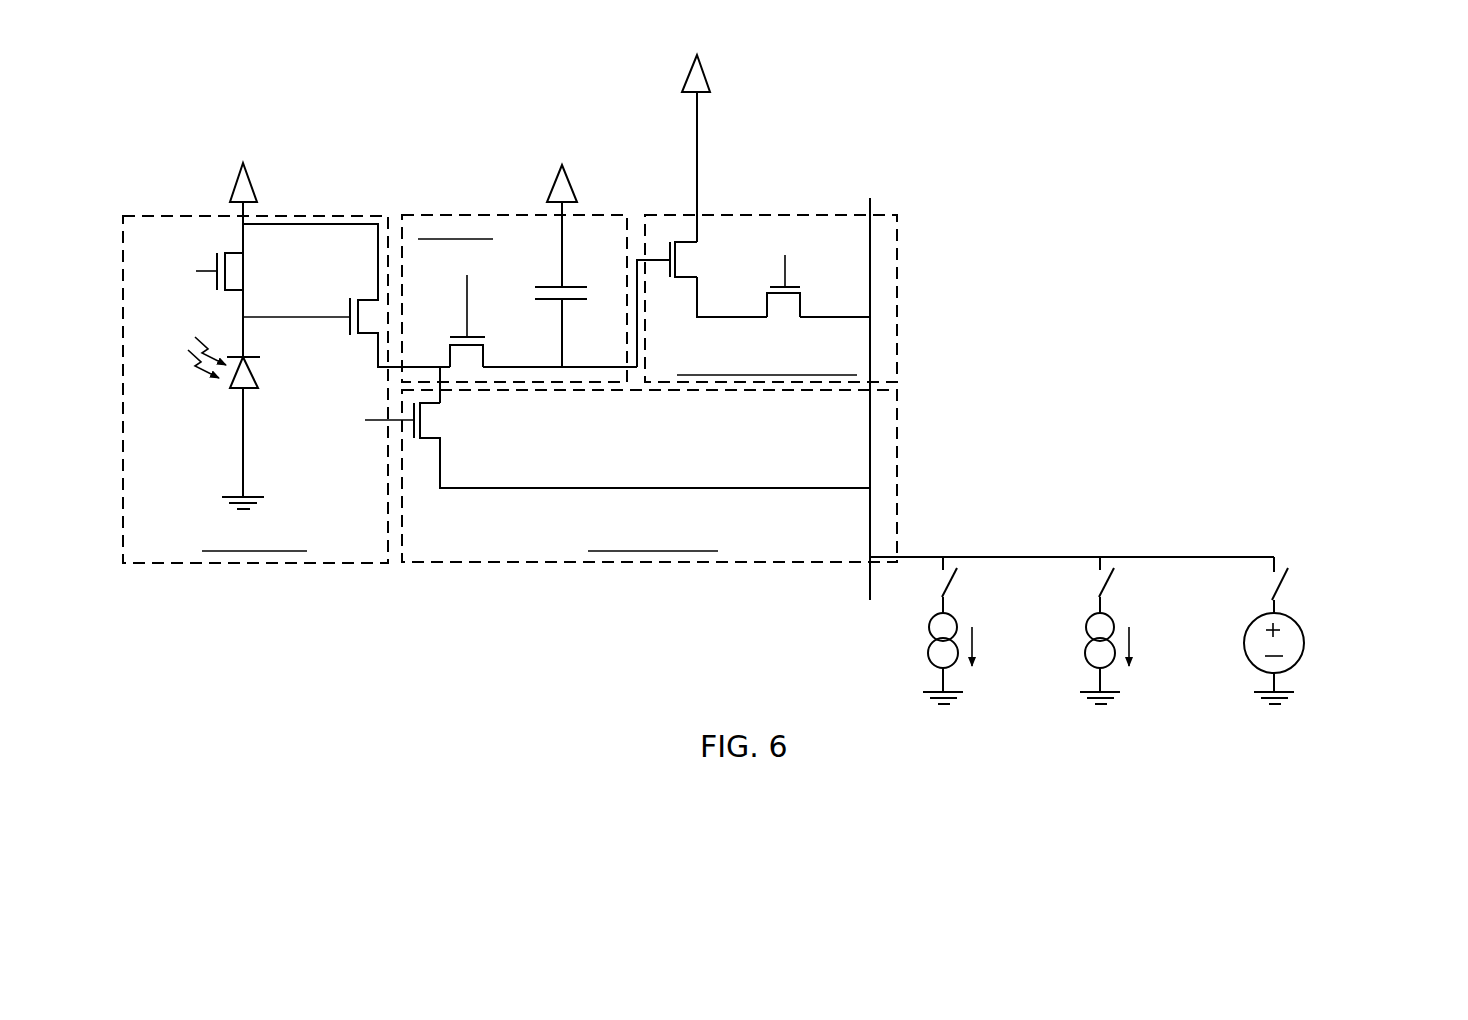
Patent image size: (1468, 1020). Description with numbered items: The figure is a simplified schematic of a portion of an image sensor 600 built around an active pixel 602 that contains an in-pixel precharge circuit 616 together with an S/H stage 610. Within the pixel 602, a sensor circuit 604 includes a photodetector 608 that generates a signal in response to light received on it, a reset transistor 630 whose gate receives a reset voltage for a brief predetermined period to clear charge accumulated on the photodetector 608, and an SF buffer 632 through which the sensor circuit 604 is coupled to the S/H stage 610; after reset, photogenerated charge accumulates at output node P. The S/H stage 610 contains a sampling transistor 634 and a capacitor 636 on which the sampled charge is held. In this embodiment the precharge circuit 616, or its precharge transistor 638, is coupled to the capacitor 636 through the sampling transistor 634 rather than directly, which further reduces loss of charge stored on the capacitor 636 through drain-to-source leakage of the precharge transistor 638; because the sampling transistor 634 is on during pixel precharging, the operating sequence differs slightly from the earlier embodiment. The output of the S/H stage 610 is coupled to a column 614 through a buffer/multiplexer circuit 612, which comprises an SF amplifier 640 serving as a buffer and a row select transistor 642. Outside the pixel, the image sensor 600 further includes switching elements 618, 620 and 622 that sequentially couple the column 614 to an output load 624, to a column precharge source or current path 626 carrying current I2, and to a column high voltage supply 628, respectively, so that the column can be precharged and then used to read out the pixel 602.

The image sensor 600 is at (1294, 203).
The pixel 602 is at (938, 243).
The sensor circuit 604 is at (363, 550).
The photodetector 608 is at (259, 373).
The S/H stage 610 is at (548, 238).
The buffer/multiplexer circuit 612 is at (851, 350).
The column 614 is at (870, 317).
The precharge circuit 616 is at (781, 550).
The switching element 618 is at (976, 571).
The switching element 620 is at (1134, 571).
The switching element 622 is at (1307, 571).
The output load 624 is at (929, 668).
The column precharge source 626 is at (1087, 668).
The column high voltage supply 628 is at (1252, 668).
The reset transistor 630 is at (255, 275).
The SF buffer 632 is at (345, 310).
The sampling transistor 634 is at (495, 354).
The capacitor 636 is at (592, 268).
The precharge transistor 638 is at (450, 420).
The SF amplifier 640 is at (698, 260).
The row select transistor 642 is at (781, 314).